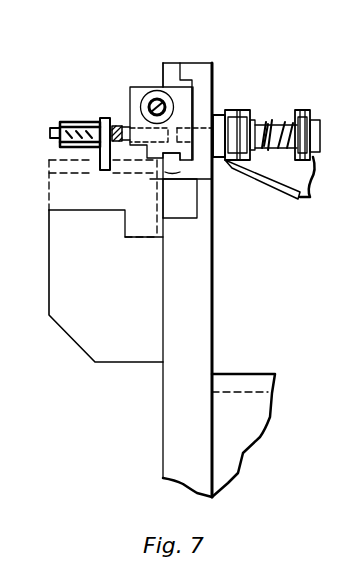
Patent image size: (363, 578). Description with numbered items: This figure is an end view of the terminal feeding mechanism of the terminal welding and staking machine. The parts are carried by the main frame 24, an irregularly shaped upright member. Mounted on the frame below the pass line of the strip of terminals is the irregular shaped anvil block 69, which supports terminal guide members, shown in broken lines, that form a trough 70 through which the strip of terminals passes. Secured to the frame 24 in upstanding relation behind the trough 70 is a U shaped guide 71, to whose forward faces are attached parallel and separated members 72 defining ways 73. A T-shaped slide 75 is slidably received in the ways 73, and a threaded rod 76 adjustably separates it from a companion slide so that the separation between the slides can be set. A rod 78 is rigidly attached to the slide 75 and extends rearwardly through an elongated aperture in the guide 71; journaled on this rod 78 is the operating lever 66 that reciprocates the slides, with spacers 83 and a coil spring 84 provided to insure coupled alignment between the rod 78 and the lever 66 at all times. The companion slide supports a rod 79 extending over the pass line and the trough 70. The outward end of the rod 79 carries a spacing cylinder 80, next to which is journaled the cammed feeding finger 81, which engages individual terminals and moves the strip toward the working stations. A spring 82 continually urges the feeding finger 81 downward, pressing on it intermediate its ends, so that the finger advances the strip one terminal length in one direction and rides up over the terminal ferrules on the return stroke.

The main frame 24 is at (202, 328).
The operating lever 66 is at (313, 186).
The anvil block 69 is at (68, 278).
The trough 70 is at (93, 163).
The U shaped guide 71 is at (187, 112).
The parallel and separated members 72 is at (163, 67).
The ways 73 is at (193, 82).
The T-shaped slide 75 is at (186, 121).
The threaded rod 76 is at (147, 100).
The rod 78 is at (277, 122).
The rod 79 is at (50, 132).
The spacing cylinder 80 is at (75, 130).
The feeding finger 81 is at (102, 120).
The spring 82 is at (115, 128).
The spacers 83 is at (303, 111).
The coil spring 84 is at (266, 123).